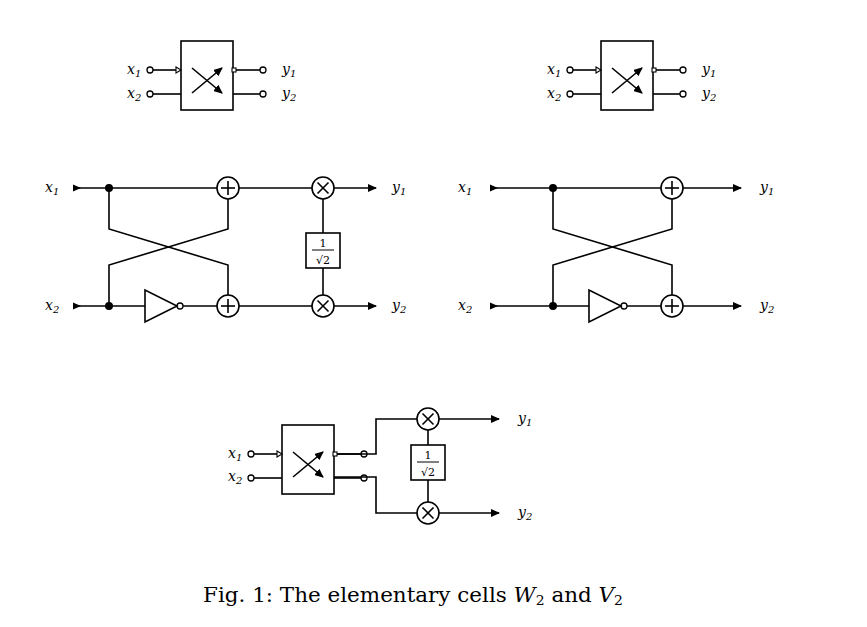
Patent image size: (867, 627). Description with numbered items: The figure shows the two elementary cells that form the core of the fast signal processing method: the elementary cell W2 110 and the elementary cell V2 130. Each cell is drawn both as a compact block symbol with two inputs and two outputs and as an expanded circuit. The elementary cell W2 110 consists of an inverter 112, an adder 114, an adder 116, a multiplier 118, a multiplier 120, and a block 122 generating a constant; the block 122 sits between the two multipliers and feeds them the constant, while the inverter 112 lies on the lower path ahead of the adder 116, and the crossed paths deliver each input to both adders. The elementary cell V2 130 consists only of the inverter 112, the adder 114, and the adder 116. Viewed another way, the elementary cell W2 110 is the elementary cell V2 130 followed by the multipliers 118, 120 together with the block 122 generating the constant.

The elementary cell W2 110 is at (230, 41).
The inverter 112 is at (165, 315).
The adder 114 is at (236, 180).
The adder 116 is at (236, 314).
The multiplier 118 is at (331, 180).
The multiplier 120 is at (331, 314).
The block generating a constant 122 is at (340, 236).
The elementary cell V2 130 is at (650, 41).